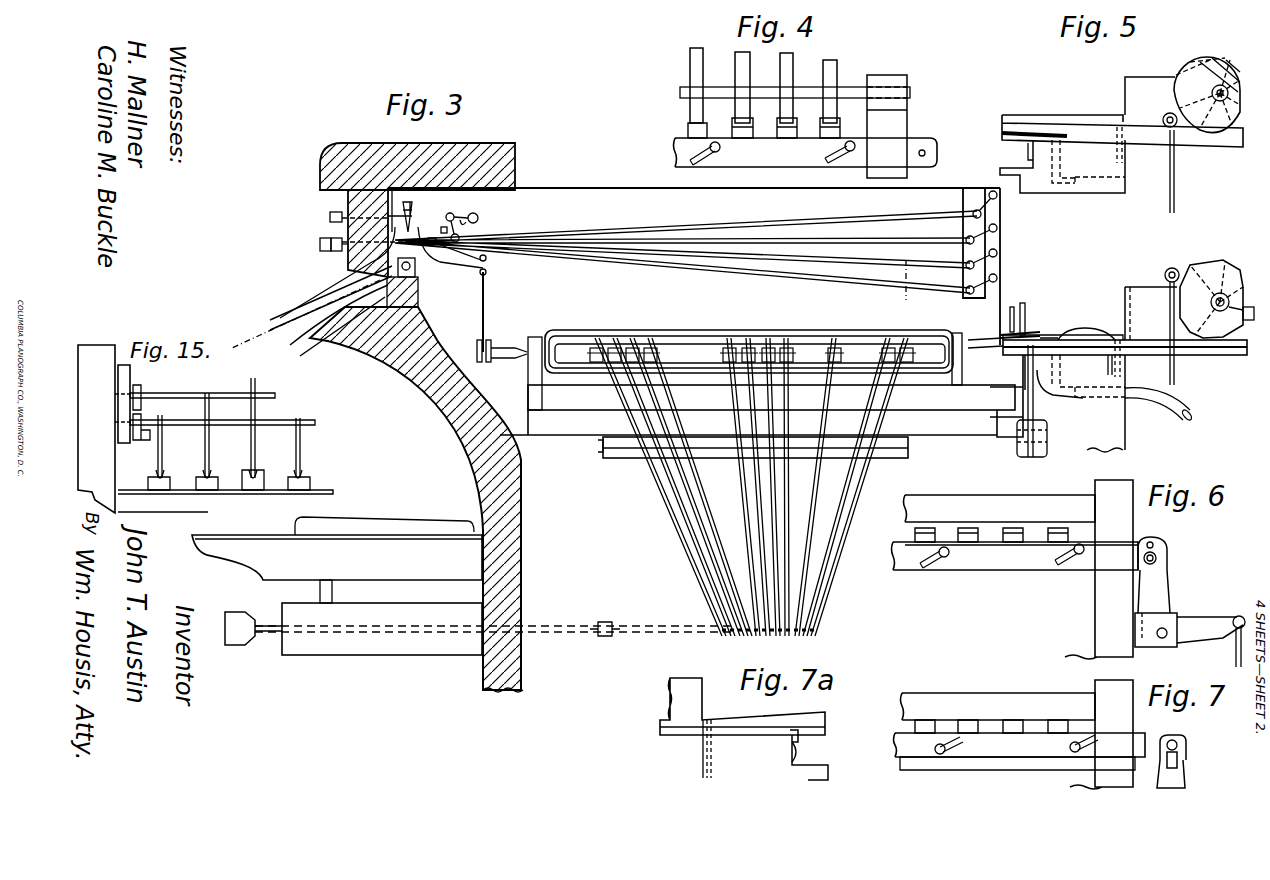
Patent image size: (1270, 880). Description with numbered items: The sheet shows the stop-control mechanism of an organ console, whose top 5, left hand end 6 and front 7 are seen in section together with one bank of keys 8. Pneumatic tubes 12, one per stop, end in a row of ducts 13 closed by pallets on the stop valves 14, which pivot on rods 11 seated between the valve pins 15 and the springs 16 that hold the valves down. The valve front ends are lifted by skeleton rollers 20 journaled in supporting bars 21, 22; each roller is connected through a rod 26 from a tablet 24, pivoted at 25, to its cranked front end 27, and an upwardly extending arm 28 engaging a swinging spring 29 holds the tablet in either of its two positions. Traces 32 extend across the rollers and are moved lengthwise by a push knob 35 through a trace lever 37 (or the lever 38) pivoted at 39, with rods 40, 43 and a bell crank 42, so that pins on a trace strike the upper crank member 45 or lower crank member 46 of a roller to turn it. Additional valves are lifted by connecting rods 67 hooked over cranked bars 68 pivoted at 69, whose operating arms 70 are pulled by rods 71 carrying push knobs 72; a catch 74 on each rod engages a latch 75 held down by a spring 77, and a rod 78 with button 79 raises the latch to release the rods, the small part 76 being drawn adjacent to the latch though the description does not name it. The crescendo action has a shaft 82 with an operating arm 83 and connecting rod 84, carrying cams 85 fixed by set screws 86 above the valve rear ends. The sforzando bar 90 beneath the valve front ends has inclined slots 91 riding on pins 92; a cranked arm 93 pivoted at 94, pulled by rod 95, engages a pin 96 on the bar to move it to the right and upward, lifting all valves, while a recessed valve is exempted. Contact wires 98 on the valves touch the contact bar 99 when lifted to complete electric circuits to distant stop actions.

In FIG. 3, the top of console 5 is at (505, 152).
In FIG. 3, the left hand end of console 6 is at (567, 197).
In FIG. 15, the left hand end of console 6 is at (104, 429).
In FIG. 3, the front of console 7 is at (445, 421).
In FIG. 3, the bank of keys 8 is at (266, 534).
In FIG. 15, the bank of keys 8 is at (225, 501).
In FIG. 3, the pivot rods 11 is at (1110, 357).
In FIG. 5, the pivot rods 11 is at (1117, 137).
In FIG. 7A, the pivot rods 11 is at (718, 749).
In FIG. 3, the pneumatic tubes 12 is at (1172, 413).
In FIG. 3, the ducts 13 is at (1058, 372).
In FIG. 5, the ducts 13 is at (1061, 153).
In FIG. 3, the stop valves 14 is at (1222, 357).
In FIG. 4, the stop valves 14 is at (788, 134).
In FIG. 5, the stop valves 14 is at (1188, 138).
In FIG. 6, the stop valves 14 is at (1012, 530).
In FIG. 7, the stop valves 14 is at (1013, 722).
In FIG. 7A, the stop valves 14 is at (744, 731).
In FIG. 15, the stop valves 14 is at (267, 478).
In FIG. 3, the valve pins 15 is at (1115, 342).
In FIG. 5, the valve pins 15 is at (1118, 123).
In FIG. 3, the springs 16 is at (1090, 326).
In FIG. 3, the skeleton rollers 20 is at (1003, 339).
In FIG. 3, the supporting bar 21 is at (530, 378).
In FIG. 3, the supporting bar 22 is at (958, 387).
In FIG. 3, the tablet 24 is at (275, 333).
In FIG. 3, the tablet pivot 25 is at (418, 290).
In FIG. 3, the rods or wires 26 is at (503, 301).
In FIG. 3, the front ends of rollers 27 is at (490, 345).
In FIG. 3, the upwardly extending arm 28 is at (400, 230).
In FIG. 3, the swinging spring 29 is at (412, 224).
In FIG. 3, the traces 32 is at (786, 347).
In FIG. 3, the push knob 35 is at (240, 648).
In FIG. 3, the trace levers 37 is at (673, 532).
In FIG. 3, the lever 38 is at (742, 493).
In FIG. 3, the lever pivot 39 is at (625, 459).
In FIG. 3, the connecting rod 40 is at (814, 631).
In FIG. 4, the connecting rod 40 is at (805, 158).
In FIG. 3, the bell crank 42 is at (665, 633).
In FIG. 3, the connecting rod 43 is at (574, 640).
In FIG. 3, the upper crank member 45 is at (710, 332).
In FIG. 3, the lower crank member 46 is at (706, 381).
In FIG. 3, the connecting rods 67 is at (997, 286).
In FIG. 15, the connecting rods 67 is at (205, 453).
In FIG. 3, the cranked bars 68 is at (1000, 290).
In FIG. 15, the cranked bars 68 is at (220, 420).
In FIG. 3, the bar pivots 69 is at (974, 212).
In FIG. 15, the bar pivots 69 is at (118, 411).
In FIG. 3, the operating arms 70 is at (966, 266).
In FIG. 15, the operating arms 70 is at (150, 383).
In FIG. 3, the connecting rods 71 is at (693, 233).
In FIG. 15, the connecting rods 71 is at (142, 434).
In FIG. 3, the push knobs 72 is at (325, 252).
In FIG. 3, the catch 74 is at (440, 242).
In FIG. 3, the latch 75 is at (441, 230).
In FIG. 3, the piece 76 is at (438, 242).
In FIG. 3, the spring 77 is at (472, 212).
In FIG. 3, the connecting rod 78 is at (348, 212).
In FIG. 3, the push button 79 is at (330, 215).
In FIG. 3, the shaft 82 is at (1216, 306).
In FIG. 4, the shaft 82 is at (849, 92).
In FIG. 5, the shaft 82 is at (1212, 87).
In FIG. 3, the operating arm 83 is at (1182, 263).
In FIG. 3, the connecting rod 84 is at (1168, 374).
In FIG. 5, the connecting rod 84 is at (1176, 200).
In FIG. 3, the cams 85 is at (1211, 268).
In FIG. 4, the cams 85 is at (826, 67).
In FIG. 5, the cams 85 is at (1186, 98).
In FIG. 3, the set screws 86 is at (1248, 306).
In FIG. 3, the sforzando bar 90 is at (1050, 396).
In FIG. 5, the sforzando bar 90 is at (1030, 156).
In FIG. 6, the sforzando bar 90 is at (1005, 565).
In FIG. 7, the sforzando bar 90 is at (1000, 760).
In FIG. 7A, the sforzando bar 90 is at (800, 740).
In FIG. 4, the inclined slots 91 is at (709, 160).
In FIG. 6, the inclined slots 91 is at (1064, 566).
In FIG. 7, the inclined slots 91 is at (958, 755).
In FIG. 4, the pins or screws 92 is at (856, 148).
In FIG. 6, the pins or screws 92 is at (946, 557).
In FIG. 7, the pins or screws 92 is at (1073, 753).
In FIG. 3, the cranked arm 93 is at (1036, 410).
In FIG. 6, the cranked arm 93 is at (1160, 592).
In FIG. 7, the cranked arm 93 is at (1182, 775).
In FIG. 6, the arm pivot 94 is at (1160, 638).
In FIG. 6, the connecting rod 95 is at (1236, 660).
In FIG. 6, the pin or screw 96 is at (1168, 552).
In FIG. 7, the pin or screw 96 is at (1185, 748).
In FIG. 3, the contact wires 98 is at (1011, 325).
In FIG. 3, the contact bar 99 is at (1040, 307).